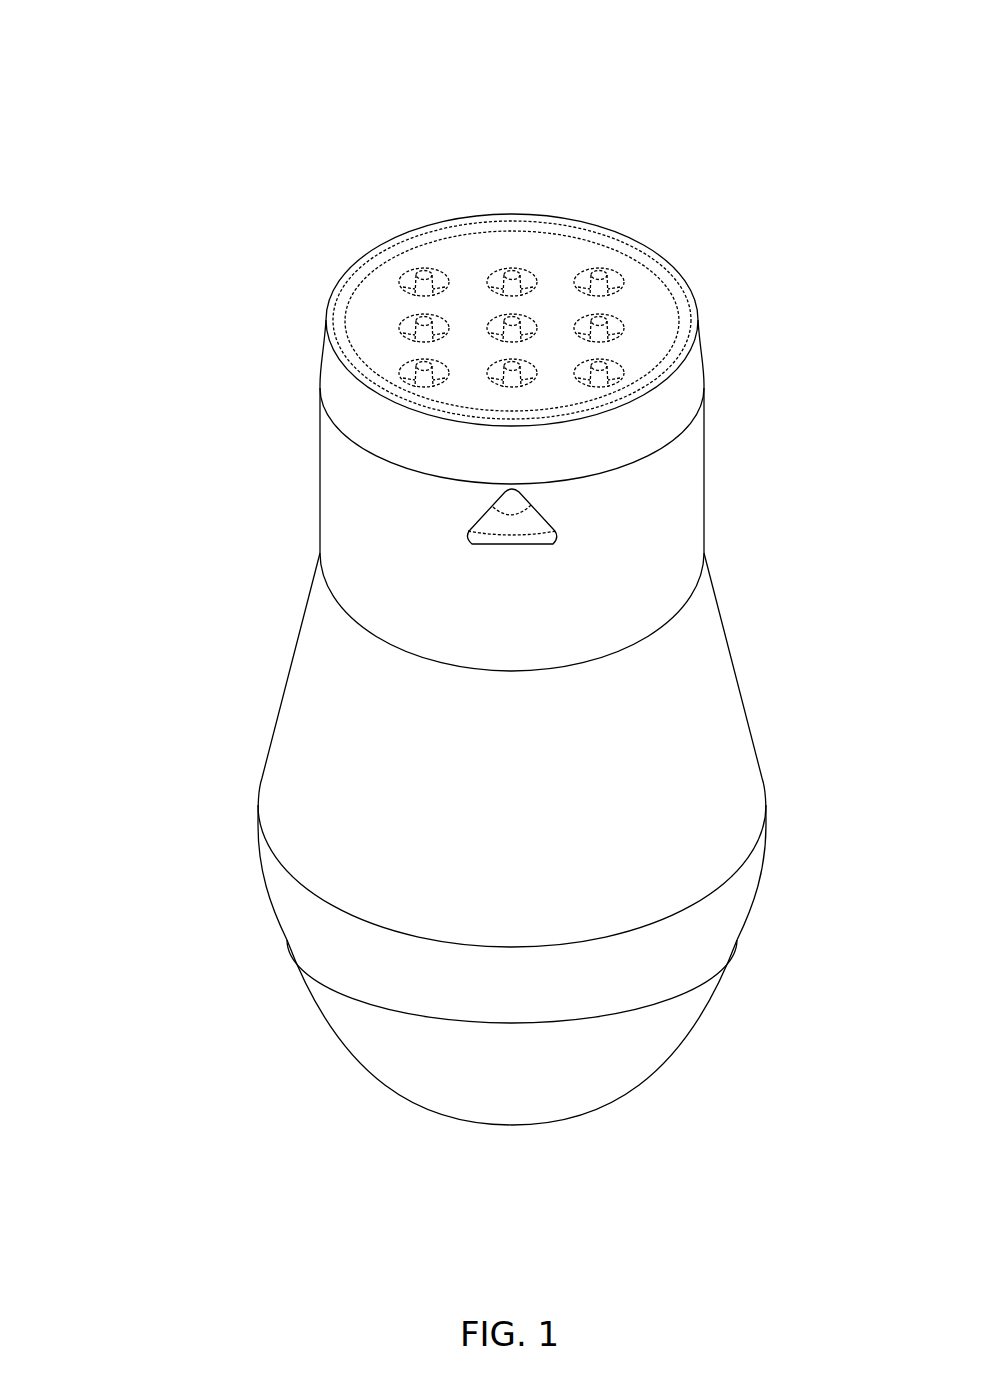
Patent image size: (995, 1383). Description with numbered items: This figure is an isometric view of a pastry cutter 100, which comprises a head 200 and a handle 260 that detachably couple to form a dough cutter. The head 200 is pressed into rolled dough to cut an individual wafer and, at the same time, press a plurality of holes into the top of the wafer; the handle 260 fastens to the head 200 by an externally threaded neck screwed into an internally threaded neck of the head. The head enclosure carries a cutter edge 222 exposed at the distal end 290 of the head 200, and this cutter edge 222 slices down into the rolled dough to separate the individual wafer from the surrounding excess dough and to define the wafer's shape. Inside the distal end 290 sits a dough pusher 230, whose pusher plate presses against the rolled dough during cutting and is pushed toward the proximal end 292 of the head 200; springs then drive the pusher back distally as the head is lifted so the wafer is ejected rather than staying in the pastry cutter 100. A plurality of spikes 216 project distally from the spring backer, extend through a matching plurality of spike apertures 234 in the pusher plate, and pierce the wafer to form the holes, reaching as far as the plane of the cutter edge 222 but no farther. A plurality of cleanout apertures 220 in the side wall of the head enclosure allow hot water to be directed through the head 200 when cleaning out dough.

The pastry cutter 100 is at (128, 180).
The head 200 is at (148, 230).
The cutter edge 222 is at (360, 263).
The dough pusher 230 is at (483, 262).
The plurality of spikes 216 is at (606, 327).
The plurality of spike apertures 234 is at (401, 374).
The plurality of cleanout apertures 220 is at (558, 539).
The handle 260 is at (170, 549).
The distal end 290 is at (642, 194).
The proximal end 292 is at (657, 1126).